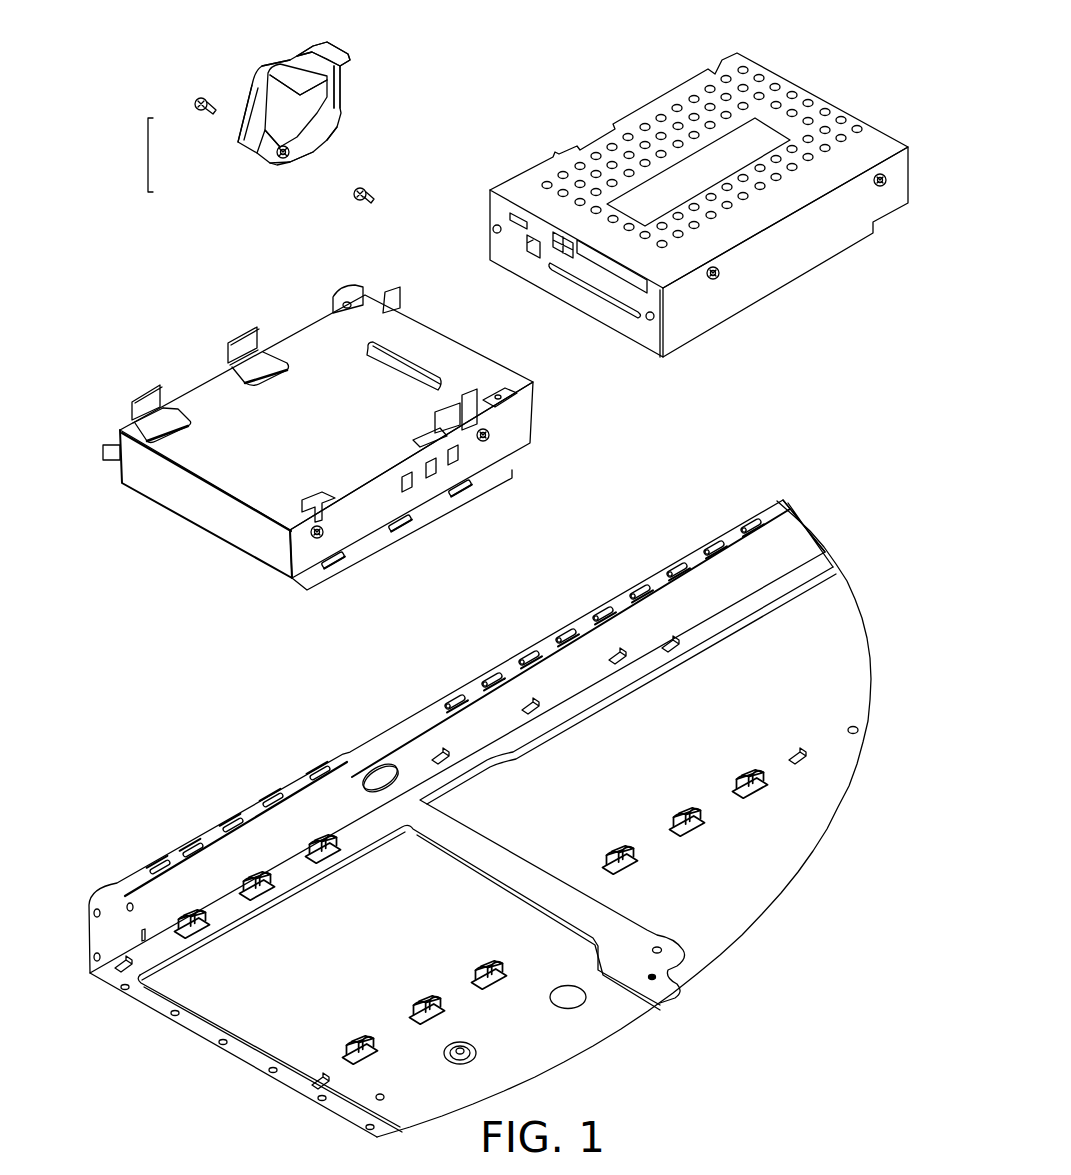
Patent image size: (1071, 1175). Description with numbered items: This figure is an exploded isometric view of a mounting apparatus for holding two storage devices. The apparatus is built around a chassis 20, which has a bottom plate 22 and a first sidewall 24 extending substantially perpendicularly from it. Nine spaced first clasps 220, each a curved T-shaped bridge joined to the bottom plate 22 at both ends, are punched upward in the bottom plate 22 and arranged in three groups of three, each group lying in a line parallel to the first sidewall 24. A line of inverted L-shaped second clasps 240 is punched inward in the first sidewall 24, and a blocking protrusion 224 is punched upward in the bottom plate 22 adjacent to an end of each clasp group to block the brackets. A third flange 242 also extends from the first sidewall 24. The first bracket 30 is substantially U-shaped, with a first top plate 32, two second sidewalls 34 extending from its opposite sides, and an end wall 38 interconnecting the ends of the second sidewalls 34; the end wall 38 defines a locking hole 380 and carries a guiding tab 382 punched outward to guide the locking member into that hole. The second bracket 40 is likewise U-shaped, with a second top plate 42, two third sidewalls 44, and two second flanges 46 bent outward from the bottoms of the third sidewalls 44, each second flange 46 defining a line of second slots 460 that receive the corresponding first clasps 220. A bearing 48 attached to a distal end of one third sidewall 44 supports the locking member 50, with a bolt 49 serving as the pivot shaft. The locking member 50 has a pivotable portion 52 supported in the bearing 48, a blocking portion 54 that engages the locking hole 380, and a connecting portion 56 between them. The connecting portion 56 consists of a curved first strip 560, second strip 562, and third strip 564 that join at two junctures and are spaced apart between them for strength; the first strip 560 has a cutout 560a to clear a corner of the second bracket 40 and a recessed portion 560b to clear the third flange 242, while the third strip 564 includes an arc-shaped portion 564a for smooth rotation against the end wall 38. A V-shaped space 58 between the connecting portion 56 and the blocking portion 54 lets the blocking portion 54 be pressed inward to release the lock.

The chassis 20 is at (493, 818).
The bottom plate 22 is at (833, 593).
The first sidewall 24 is at (103, 903).
The first bracket 30 is at (668, 205).
The first top plate 32 is at (797, 112).
The second sidewalls 34 is at (650, 93).
The end wall 38 is at (590, 300).
The second bracket 40 is at (324, 440).
The second top plate 42 is at (270, 493).
The third sidewalls 44 is at (118, 440).
The second flanges 46 is at (107, 462).
The bearing 48 is at (385, 300).
The bolt 49 is at (367, 187).
The locking member 50 is at (353, 43).
The pivotable portion 52 is at (300, 150).
The blocking portion 54 is at (340, 82).
The connecting portion 56 is at (129, 155).
The V-shaped space 58 is at (303, 50).
The first clasps 220 is at (702, 836).
The blocking protrusion 224 is at (667, 647).
The second clasps 240 is at (443, 757).
The third flange 242 is at (260, 813).
The locking hole 380 is at (520, 227).
The guiding tab 382 is at (533, 257).
The second slots 460 is at (450, 493).
The first strip 560 is at (250, 103).
The cutout 560a is at (283, 87).
The recessed portion 560b is at (292, 60).
The second strip 562 is at (273, 140).
The third strip 564 is at (300, 163).
The arc-shaped portion 564a is at (337, 132).